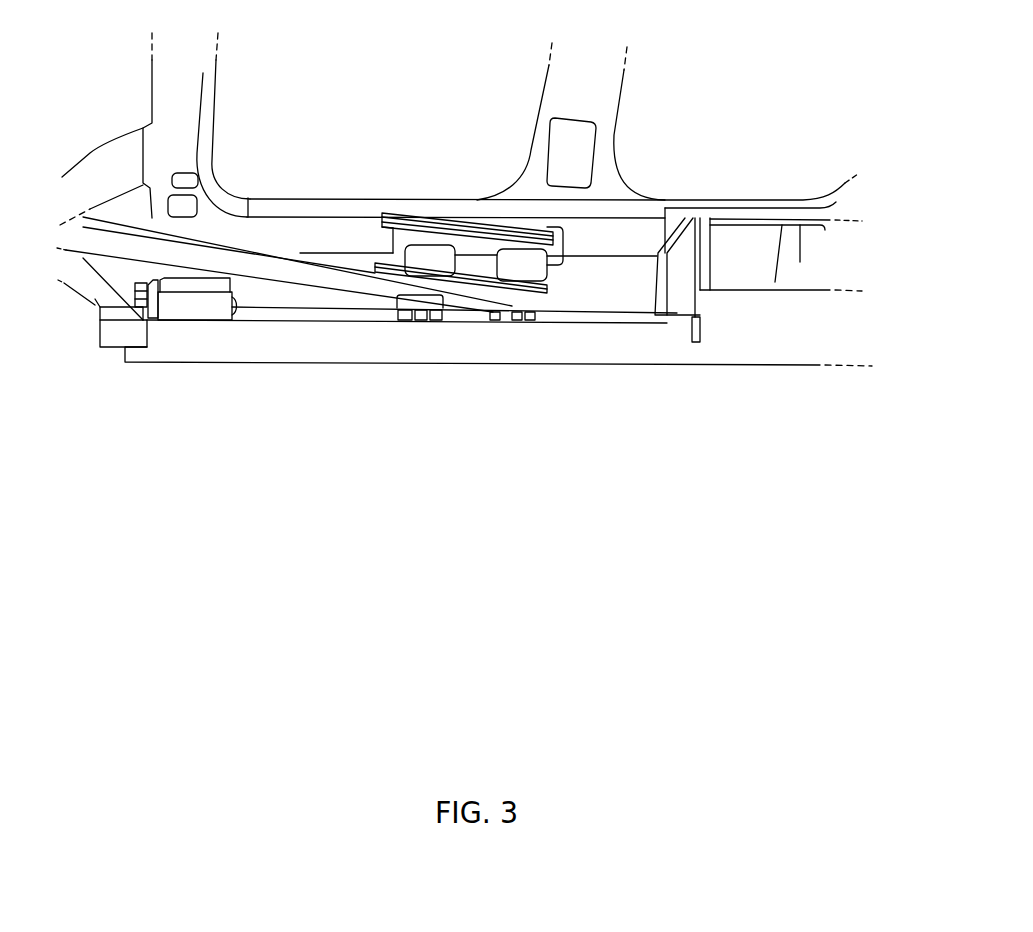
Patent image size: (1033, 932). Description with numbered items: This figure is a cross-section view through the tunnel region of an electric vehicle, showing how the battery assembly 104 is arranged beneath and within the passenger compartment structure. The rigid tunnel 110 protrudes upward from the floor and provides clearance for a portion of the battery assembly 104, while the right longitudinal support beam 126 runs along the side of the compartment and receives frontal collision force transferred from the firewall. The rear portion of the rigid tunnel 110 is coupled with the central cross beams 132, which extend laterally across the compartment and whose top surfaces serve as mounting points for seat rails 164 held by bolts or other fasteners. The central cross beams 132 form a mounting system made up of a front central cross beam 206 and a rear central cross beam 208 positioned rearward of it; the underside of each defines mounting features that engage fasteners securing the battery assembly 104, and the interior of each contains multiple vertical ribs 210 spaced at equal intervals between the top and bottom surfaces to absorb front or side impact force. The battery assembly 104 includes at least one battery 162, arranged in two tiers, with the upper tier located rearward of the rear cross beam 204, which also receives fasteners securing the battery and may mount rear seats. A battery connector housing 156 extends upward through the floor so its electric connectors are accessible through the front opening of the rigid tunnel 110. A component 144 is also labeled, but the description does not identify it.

The battery assembly 104 is at (727, 367).
The rigid tunnel 110 is at (188, 243).
The right longitudinal support beam 126 is at (308, 207).
The central cross beams 132 is at (517, 260).
The mounting bracket 144 is at (108, 338).
The battery connector housing 156 is at (183, 302).
The battery 162 is at (337, 353).
The seat rails 164 is at (543, 290).
The rear cross beam 204 is at (697, 215).
The front central cross beam 206 is at (413, 253).
The rear central cross beam 208 is at (533, 265).
The vertical ribs 210 is at (433, 322).